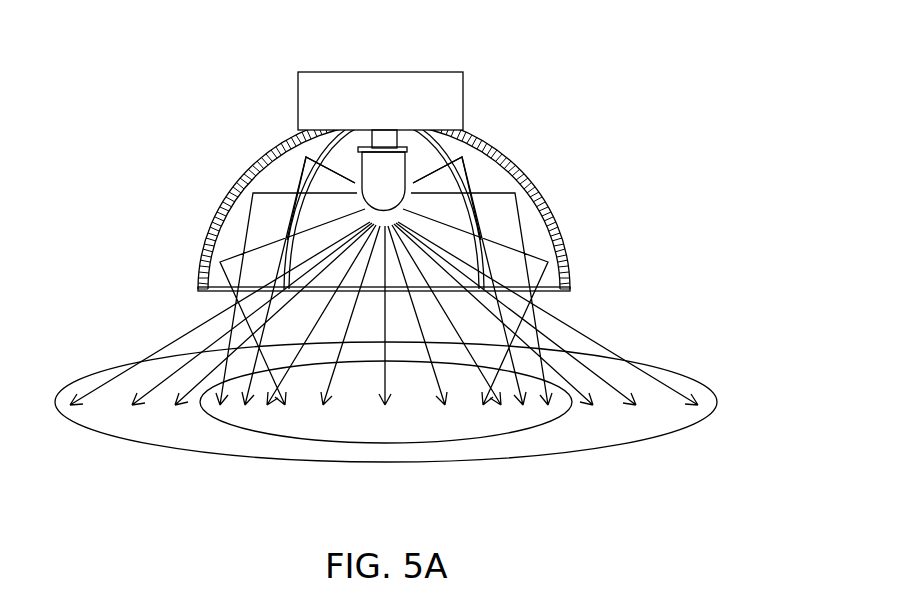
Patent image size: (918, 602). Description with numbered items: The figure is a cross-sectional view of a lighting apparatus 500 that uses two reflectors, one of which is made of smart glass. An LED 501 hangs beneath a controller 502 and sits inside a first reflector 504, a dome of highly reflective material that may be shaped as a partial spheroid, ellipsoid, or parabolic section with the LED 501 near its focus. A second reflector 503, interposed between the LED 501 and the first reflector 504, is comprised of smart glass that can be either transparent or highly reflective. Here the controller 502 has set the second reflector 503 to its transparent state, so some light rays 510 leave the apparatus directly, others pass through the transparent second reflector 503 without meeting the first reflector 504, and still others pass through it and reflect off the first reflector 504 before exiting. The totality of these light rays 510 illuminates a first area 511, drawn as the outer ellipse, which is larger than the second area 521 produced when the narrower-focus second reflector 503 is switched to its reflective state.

The lighting apparatus 500 is at (402, 149).
The LED 501 is at (408, 163).
The controller 502 is at (413, 72).
The second reflector 503 is at (338, 133).
The first reflector 504 is at (230, 190).
The light rays 510 is at (176, 324).
The first area 511 is at (632, 427).
The second area 521 is at (433, 427).